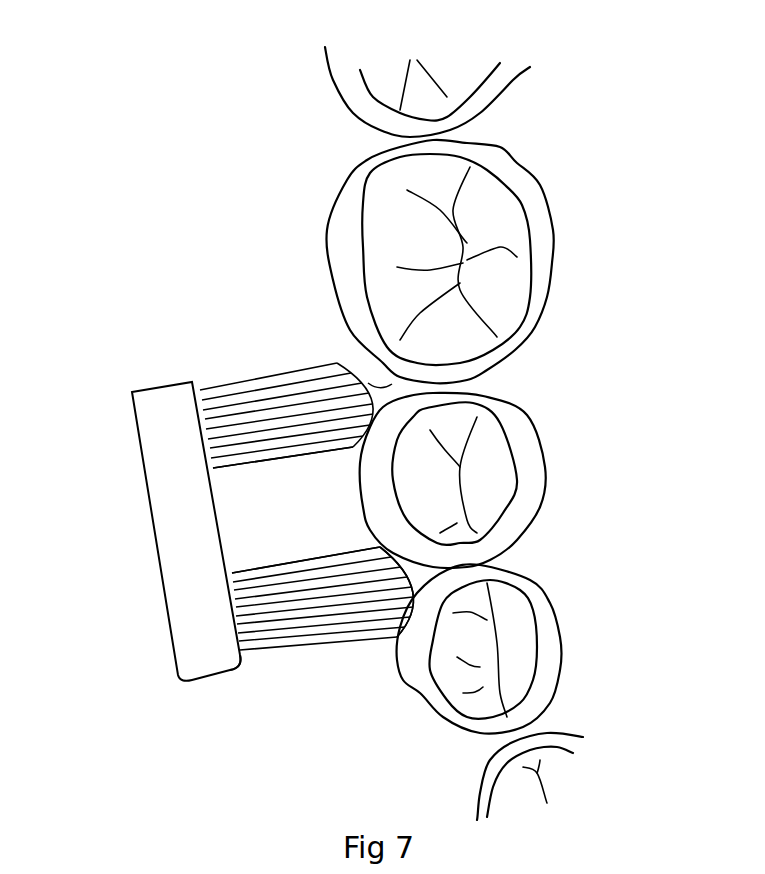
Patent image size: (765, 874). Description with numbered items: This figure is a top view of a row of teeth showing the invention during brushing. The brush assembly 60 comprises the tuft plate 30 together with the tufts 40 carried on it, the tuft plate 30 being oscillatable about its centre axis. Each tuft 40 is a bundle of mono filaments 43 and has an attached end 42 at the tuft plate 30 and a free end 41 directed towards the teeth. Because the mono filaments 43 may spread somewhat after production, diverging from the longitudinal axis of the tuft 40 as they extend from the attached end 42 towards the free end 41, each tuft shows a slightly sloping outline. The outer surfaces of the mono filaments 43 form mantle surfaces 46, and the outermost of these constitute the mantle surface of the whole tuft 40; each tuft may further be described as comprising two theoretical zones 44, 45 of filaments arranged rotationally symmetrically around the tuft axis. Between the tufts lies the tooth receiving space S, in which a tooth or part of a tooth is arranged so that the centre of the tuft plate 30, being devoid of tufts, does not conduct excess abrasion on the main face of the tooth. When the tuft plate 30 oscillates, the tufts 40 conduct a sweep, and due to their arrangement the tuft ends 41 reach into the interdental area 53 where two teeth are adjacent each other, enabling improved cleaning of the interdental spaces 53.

The brush assembly 60 is at (108, 352).
The tuft plate 30 is at (193, 545).
The theoretical zone of mono filaments 44 is at (352, 373).
The tuft 40 is at (310, 608).
The mono filament 43 is at (322, 598).
The free end of tuft 41 is at (378, 650).
The attached end of tuft 42 is at (259, 668).
The theoretical zone of mono filaments 45 is at (323, 458).
The mantle surface of mono filament 46 is at (296, 510).
The interdental area 53 is at (384, 383).
The tooth receiving space S is at (257, 534).